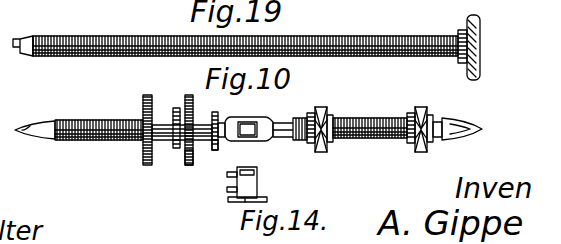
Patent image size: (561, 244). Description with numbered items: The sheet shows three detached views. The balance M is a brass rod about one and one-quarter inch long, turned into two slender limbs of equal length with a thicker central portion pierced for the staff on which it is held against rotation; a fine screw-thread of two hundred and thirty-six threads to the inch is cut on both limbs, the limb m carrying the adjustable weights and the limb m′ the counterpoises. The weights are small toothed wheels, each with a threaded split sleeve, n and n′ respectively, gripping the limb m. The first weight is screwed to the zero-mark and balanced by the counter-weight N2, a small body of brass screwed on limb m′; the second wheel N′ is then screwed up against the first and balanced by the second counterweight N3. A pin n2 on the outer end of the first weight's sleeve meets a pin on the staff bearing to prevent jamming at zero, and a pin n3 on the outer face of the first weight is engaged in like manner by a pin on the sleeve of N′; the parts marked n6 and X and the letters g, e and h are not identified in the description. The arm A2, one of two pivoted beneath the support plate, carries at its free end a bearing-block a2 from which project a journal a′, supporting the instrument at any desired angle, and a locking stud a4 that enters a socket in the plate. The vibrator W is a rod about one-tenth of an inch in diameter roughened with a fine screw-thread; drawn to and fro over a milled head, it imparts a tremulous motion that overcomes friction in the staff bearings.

In FIG. 19, the vibrator rod W is at (246, 41).
In FIG. 19, the part g is at (286, 5).
In FIG. 19, the part e is at (345, 5).
In FIG. 19, the part h is at (406, 5).
In FIG. 10, the weight limb of the balance m is at (104, 119).
In FIG. 10, the second weight wheel N′ is at (143, 98).
In FIG. 10, the split sleeve of second weight n′ is at (173, 120).
In FIG. 10, the knurled nut n6 is at (185, 95).
In FIG. 10, the split sleeve of first weight n is at (213, 121).
In FIG. 10, the balance M is at (262, 117).
In FIG. 10, the stop pin on weight sleeve n2 is at (228, 143).
In FIG. 10, the counter-weight N2 is at (320, 107).
In FIG. 10, the counterpoise limb of the balance m′ is at (370, 118).
In FIG. 10, the second counterweight N3 is at (421, 107).
In FIG. 10, the stop pin on first weight n3 is at (183, 150).
In FIG. 10, the nut part X is at (214, 151).
In FIG. 14, the arm A2 is at (256, 184).
In FIG. 14, the bearing pin or journal a′ is at (227, 175).
In FIG. 14, the locking pin or stud a4 is at (230, 190).
In FIG. 14, the bearing-block a2 is at (248, 185).